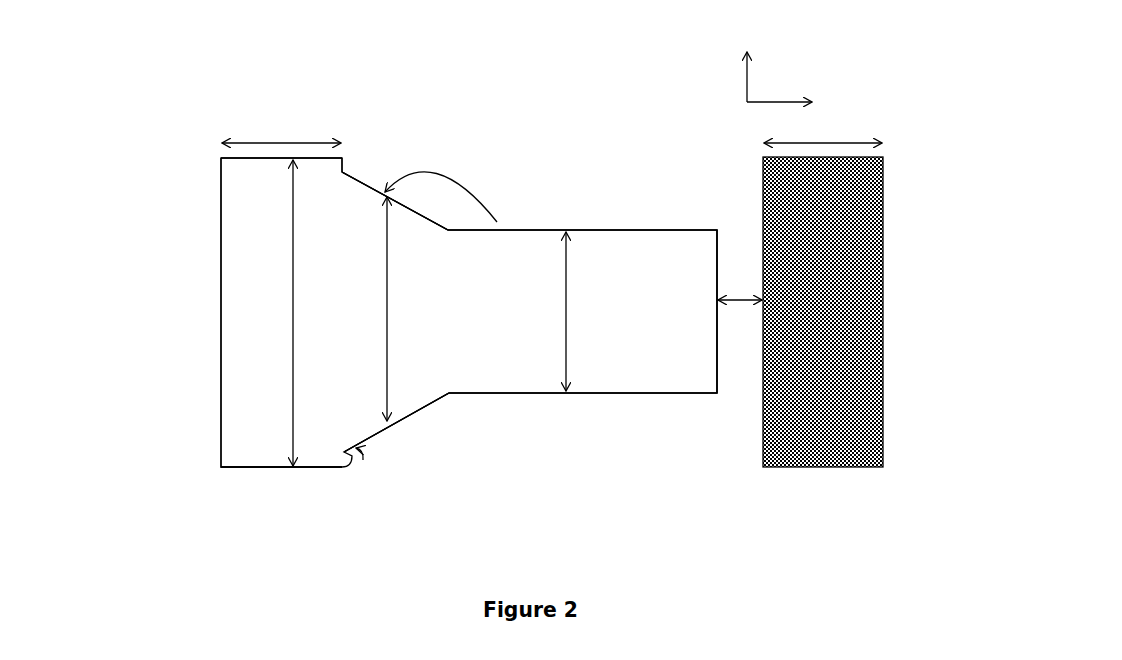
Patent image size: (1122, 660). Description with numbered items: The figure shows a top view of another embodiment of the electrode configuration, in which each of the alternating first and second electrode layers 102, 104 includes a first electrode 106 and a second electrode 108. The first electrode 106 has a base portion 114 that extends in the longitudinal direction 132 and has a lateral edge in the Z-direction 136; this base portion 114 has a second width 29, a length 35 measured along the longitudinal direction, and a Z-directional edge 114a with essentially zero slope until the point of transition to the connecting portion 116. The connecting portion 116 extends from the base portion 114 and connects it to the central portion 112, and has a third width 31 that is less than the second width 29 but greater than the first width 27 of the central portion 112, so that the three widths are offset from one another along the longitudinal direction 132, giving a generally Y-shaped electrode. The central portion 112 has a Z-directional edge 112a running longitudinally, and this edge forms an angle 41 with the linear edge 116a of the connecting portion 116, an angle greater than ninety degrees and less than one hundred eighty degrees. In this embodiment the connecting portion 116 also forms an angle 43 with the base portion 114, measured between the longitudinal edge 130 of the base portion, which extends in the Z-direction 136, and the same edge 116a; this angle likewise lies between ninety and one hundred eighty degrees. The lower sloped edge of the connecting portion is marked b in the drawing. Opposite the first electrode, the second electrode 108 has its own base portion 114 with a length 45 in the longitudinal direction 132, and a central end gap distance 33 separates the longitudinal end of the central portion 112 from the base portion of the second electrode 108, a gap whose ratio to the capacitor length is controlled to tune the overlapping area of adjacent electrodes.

The first electrode layer 102 is at (392, 273).
The second electrode layer 104 is at (392, 284).
The first electrode 106 is at (220, 250).
The second electrode 108 is at (928, 181).
The central portion 112 is at (715, 491).
The Z-directional edge 112a is at (677, 228).
The base portion 114 is at (342, 491).
The Z-directional edge 114a is at (245, 467).
The connecting portion 116 is at (450, 491).
The edge 116a is at (376, 188).
The longitudinal edge 130 is at (343, 171).
The longitudinal direction 132 is at (795, 102).
The Z-direction 136 is at (746, 67).
The first width 27 is at (581, 311).
The second width 29 is at (307, 313).
The third width 31 is at (400, 309).
The central end gap distance 33 is at (760, 308).
The length 35 is at (281, 131).
The angle 41 is at (443, 196).
The angle 43 is at (371, 457).
The length 45 is at (823, 131).
The lower tapered surface b is at (405, 420).